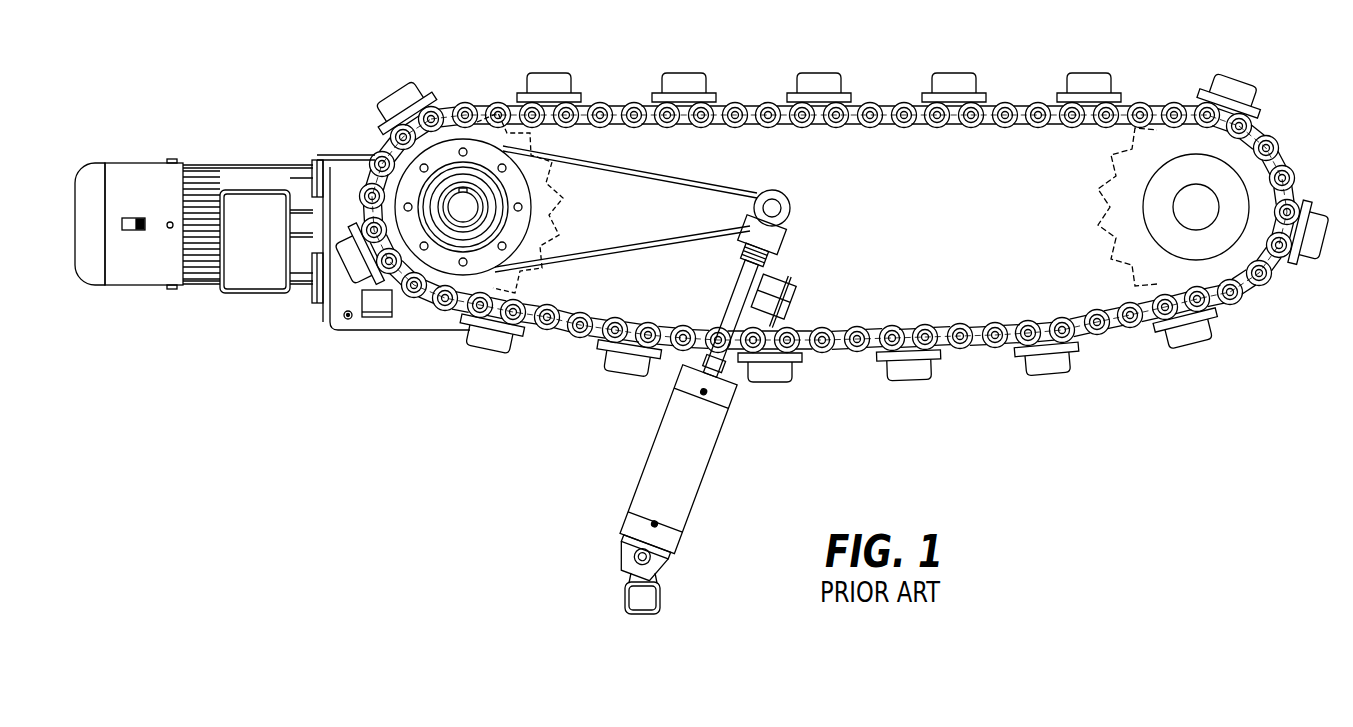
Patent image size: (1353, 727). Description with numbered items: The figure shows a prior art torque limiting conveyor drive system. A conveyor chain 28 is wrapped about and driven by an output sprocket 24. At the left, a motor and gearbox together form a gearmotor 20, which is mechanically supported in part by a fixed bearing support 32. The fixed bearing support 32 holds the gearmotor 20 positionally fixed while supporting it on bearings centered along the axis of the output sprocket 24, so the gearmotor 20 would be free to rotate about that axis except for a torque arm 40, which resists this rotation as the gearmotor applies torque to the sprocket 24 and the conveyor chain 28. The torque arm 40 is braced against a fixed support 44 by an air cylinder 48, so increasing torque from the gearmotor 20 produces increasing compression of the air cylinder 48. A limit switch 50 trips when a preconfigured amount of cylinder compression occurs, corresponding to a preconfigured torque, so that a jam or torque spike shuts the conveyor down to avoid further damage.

The gearmotor 20 is at (348, 175).
The output sprocket 24 is at (557, 180).
The conveyor chain 28 is at (1003, 100).
The fixed bearing support 32 is at (453, 160).
The torque arm 40 is at (608, 250).
The fixed support 44 is at (622, 597).
The air cylinder 48 is at (685, 482).
The limit switch 50 is at (787, 302).